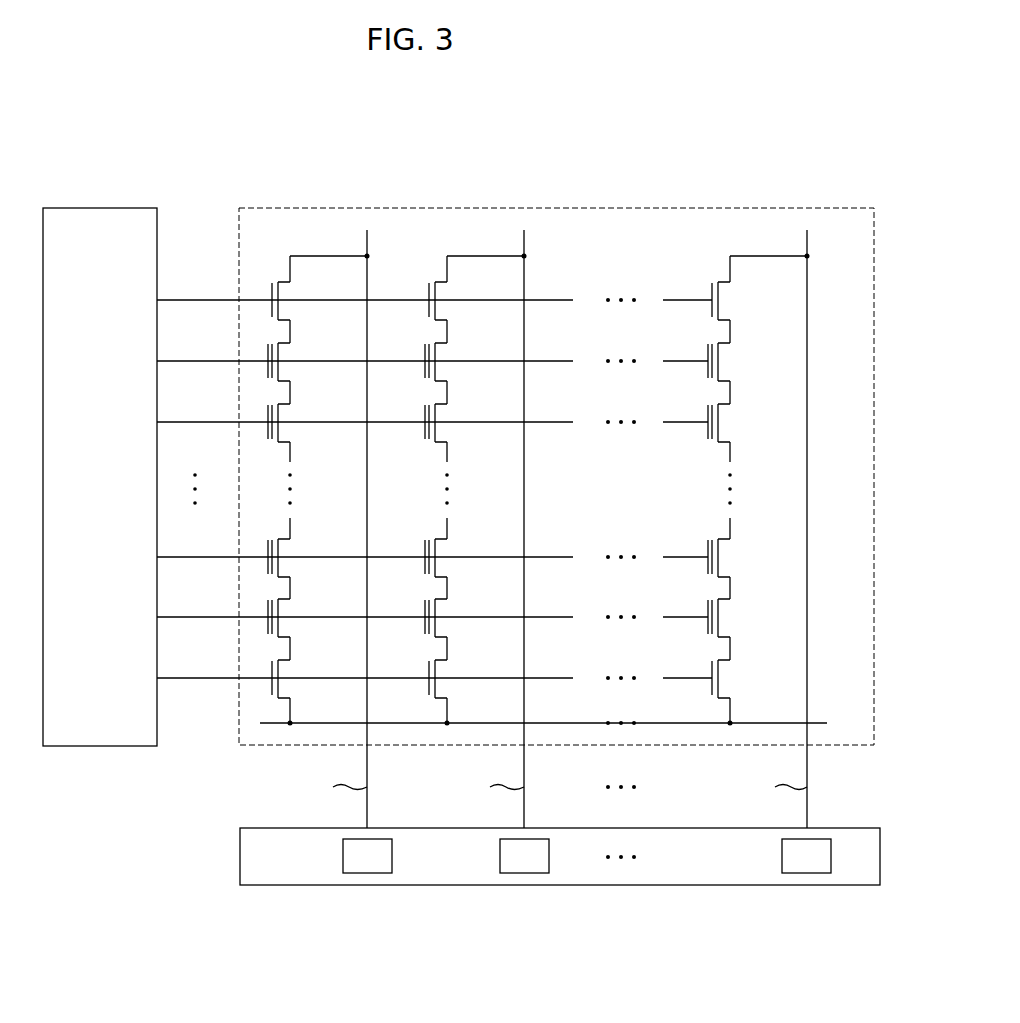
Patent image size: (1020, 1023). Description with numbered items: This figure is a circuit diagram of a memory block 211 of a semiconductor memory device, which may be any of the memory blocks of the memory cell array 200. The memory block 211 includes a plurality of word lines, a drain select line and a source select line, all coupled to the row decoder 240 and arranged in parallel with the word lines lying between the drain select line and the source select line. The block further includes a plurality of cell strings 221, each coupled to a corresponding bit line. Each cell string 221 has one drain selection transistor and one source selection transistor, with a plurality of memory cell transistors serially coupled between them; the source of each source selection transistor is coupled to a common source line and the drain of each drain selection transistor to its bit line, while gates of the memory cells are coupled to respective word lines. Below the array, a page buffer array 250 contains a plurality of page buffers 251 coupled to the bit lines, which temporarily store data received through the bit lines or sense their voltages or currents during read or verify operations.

The memory cell array 200 is at (853, 116).
The memory block 211 is at (768, 207).
The cell string 221 is at (274, 242).
The row decoder 240 is at (100, 208).
The page buffer array 250 is at (240, 857).
The page buffer 251 is at (343, 857).